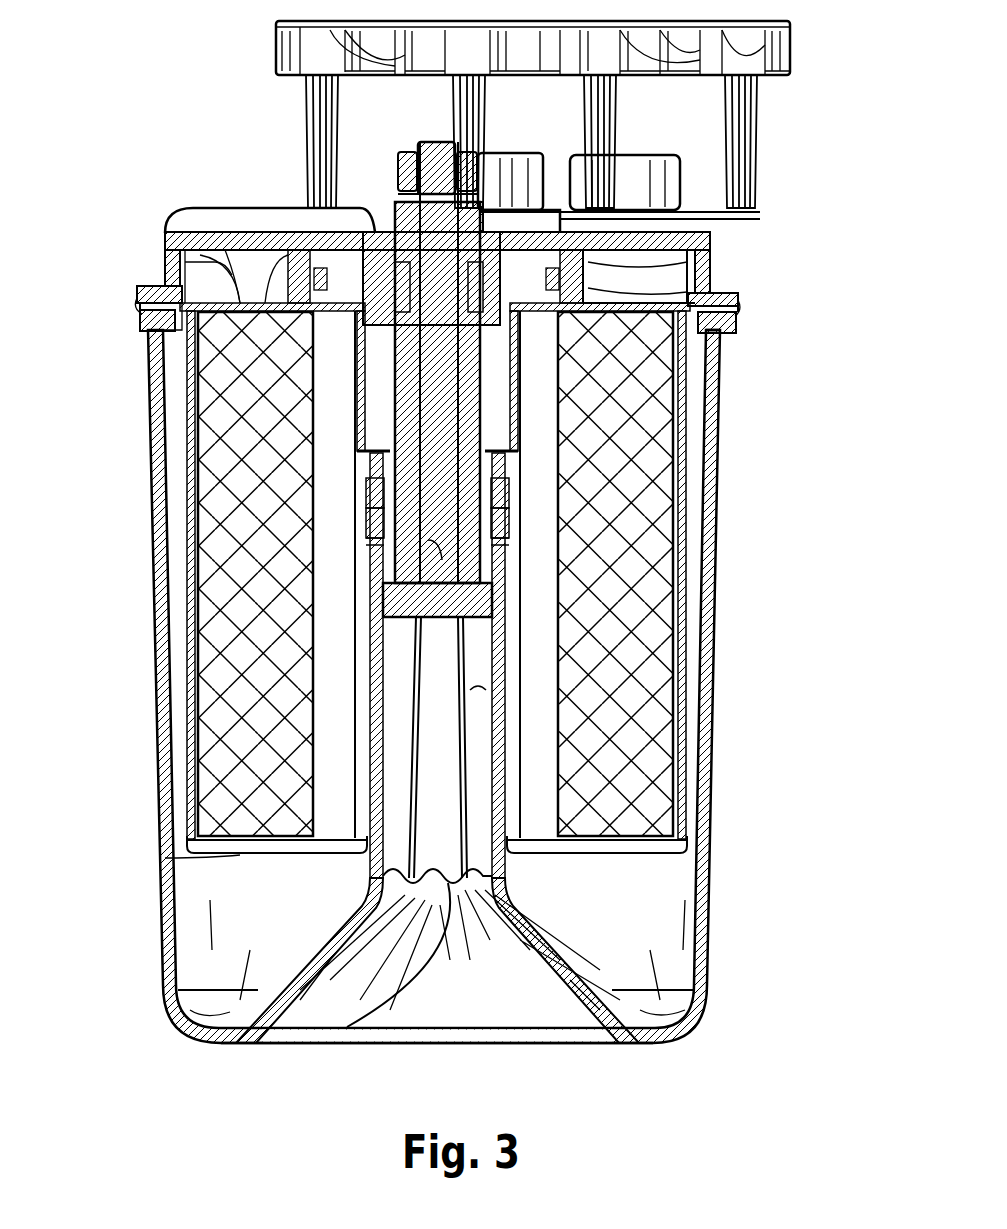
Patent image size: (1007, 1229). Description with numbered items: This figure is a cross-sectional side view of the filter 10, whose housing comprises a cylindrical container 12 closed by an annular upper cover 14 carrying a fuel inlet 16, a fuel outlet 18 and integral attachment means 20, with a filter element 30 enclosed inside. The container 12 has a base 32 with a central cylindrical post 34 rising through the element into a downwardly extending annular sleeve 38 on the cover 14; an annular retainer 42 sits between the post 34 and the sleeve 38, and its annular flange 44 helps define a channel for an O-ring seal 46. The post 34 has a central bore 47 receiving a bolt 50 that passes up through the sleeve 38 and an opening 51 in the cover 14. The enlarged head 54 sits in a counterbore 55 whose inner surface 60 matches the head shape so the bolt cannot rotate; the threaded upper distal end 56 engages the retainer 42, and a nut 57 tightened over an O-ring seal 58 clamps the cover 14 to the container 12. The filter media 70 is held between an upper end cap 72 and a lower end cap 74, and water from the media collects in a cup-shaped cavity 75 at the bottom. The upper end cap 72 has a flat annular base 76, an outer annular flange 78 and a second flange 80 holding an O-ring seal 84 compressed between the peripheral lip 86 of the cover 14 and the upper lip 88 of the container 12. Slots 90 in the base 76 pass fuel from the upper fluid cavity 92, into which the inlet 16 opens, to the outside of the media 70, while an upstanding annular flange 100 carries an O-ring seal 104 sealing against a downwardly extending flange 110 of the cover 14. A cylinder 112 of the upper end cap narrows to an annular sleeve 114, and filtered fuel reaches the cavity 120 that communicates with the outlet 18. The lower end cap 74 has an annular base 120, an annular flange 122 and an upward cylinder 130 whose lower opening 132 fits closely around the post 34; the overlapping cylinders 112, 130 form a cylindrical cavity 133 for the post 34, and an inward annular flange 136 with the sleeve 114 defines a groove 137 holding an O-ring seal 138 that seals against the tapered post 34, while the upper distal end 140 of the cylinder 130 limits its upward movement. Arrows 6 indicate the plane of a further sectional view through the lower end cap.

The section line 6 is at (342, 812).
The filter 10 is at (207, 88).
The cylindrical container 12 is at (165, 618).
The annular upper cover 14 is at (165, 232).
The fuel inlet 16 is at (650, 152).
The fuel outlet 18 is at (518, 155).
The attachment means 20 is at (790, 45).
The filter element 30 is at (188, 450).
The base 32 is at (668, 1046).
The central cylindrical post 34 is at (515, 862).
The annular sleeve 38 is at (688, 345).
The annular retainer 42 is at (700, 214).
The annular flange 44 is at (680, 297).
The O-ring seal 46 is at (740, 306).
The central bore 47 is at (380, 545).
The bolt 50 is at (440, 490).
The opening 51 is at (377, 240).
The enlarged head 54 is at (475, 605).
The counterbore 55 is at (395, 578).
The upper distal end 56 is at (428, 142).
The nut 57 is at (405, 155).
The O-ring seal 58 is at (470, 195).
The inner surface 60 is at (335, 1035).
The filter media 70 is at (192, 665).
The upper end cap 72 is at (200, 280).
The lower end cap 74 is at (258, 846).
The cup-shaped cavity 75 is at (692, 1010).
The flat annular base 76 is at (187, 234).
The outer annular flange 78 is at (185, 350).
The second downwardly-extending flange 80 is at (175, 337).
The O-ring seal 84 is at (145, 322).
The outer peripheral lip 86 is at (737, 332).
The upper lip 88 is at (720, 345).
The slots 90 is at (148, 294).
The upper fluid cavity 92 is at (183, 262).
The annular flange 100 is at (285, 236).
The O-ring seal 104 is at (247, 235).
The downwardly-extending annular flange 110 is at (600, 258).
The cylinder 112 is at (358, 388).
The annular sleeve 114 is at (370, 494).
The cavity 120 is at (332, 215).
The annular flange 122 is at (200, 838).
The cylinder 130 is at (520, 712).
The lower opening 132 is at (462, 822).
The cylindrical cavity 133 is at (505, 598).
The annular flange 136 is at (505, 562).
The groove 137 is at (370, 518).
The O-ring seal 138 is at (505, 515).
The upper distal end 140 is at (507, 468).